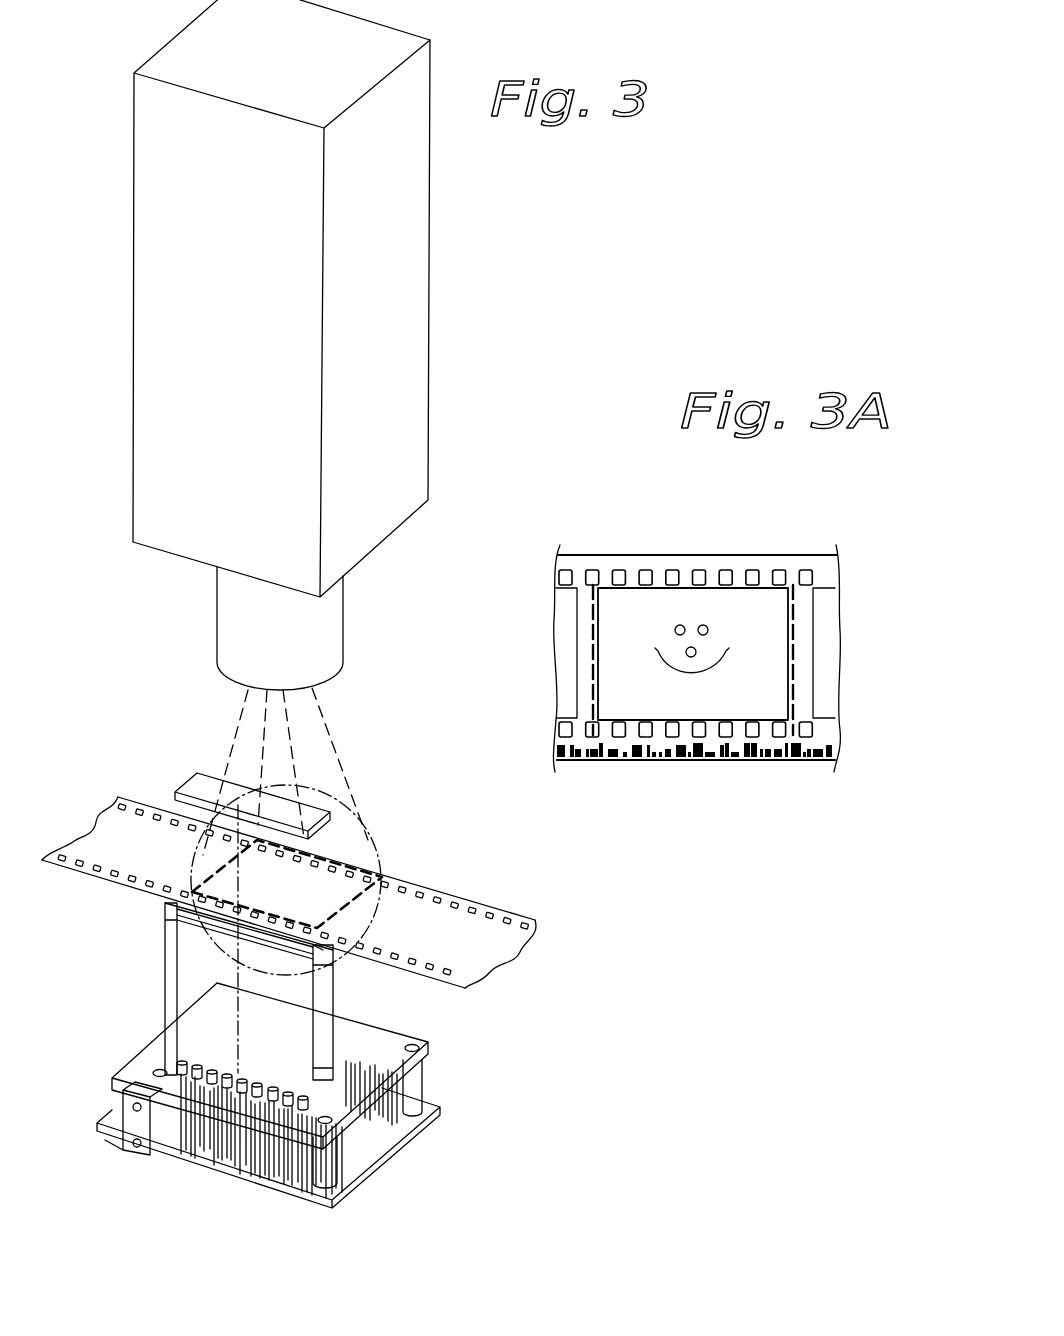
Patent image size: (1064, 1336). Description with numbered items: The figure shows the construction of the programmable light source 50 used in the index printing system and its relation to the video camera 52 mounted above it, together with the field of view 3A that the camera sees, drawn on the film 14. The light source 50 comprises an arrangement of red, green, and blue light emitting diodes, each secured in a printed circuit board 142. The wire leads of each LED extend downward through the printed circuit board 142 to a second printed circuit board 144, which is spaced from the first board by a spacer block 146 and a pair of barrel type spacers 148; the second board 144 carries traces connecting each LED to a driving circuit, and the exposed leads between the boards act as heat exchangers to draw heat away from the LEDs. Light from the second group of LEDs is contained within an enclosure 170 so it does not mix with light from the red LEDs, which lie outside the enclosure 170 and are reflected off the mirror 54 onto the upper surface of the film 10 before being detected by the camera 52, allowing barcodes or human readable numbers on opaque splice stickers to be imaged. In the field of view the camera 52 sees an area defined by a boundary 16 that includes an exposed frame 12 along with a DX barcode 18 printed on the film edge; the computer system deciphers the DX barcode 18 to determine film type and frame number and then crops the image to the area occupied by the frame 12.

In FIG. 3, the video camera 52 is at (417, 275).
In FIG. 3, the mirror 54 is at (230, 795).
In FIG. 3, the detail view region 3A is at (384, 822).
In FIG. 3, the film 10 is at (432, 932).
In FIG. 3, the exposed frame 12 is at (372, 878).
In FIG. 3A, the exposed frame 12 is at (668, 708).
In FIG. 3, the programmable light source 50 is at (194, 991).
In FIG. 3, the enclosure 170 is at (172, 983).
In FIG. 3, the printed circuit board 142 is at (430, 1045).
In FIG. 3, the barrel type spacers 148 is at (422, 1082).
In FIG. 3, the second printed circuit board 144 is at (440, 1107).
In FIG. 3, the spacer block 146 is at (123, 1105).
In FIG. 3A, the film 14 is at (723, 557).
In FIG. 3A, the boundary 16 is at (787, 630).
In FIG. 3A, the DX barcode 18 is at (707, 748).